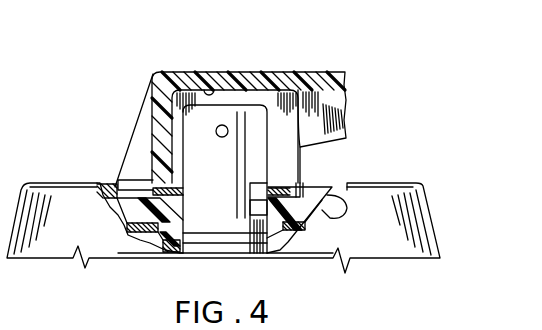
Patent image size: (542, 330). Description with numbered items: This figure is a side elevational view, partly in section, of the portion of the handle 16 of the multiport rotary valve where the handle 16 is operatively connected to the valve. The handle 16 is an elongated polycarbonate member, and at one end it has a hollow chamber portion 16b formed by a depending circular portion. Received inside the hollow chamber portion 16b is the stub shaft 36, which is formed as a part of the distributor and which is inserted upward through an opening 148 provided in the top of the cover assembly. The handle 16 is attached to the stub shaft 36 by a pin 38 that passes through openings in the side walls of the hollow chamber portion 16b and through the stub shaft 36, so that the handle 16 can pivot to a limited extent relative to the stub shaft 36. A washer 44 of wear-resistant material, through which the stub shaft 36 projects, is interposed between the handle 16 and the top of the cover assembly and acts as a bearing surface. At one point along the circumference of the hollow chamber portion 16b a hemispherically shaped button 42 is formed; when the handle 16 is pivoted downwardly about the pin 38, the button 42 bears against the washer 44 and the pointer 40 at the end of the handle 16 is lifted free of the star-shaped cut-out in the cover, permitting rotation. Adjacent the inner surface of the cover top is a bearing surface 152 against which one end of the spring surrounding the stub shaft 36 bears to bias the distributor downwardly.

The handle 16 is at (320, 68).
The hollow chamber portion 16b is at (208, 86).
The stub shaft 36 is at (226, 184).
The pin 38 is at (226, 125).
The pointer 40 is at (140, 144).
The button 42 is at (297, 188).
The washer 44 is at (290, 198).
The opening 148 is at (265, 211).
The bearing surface 152 is at (158, 232).